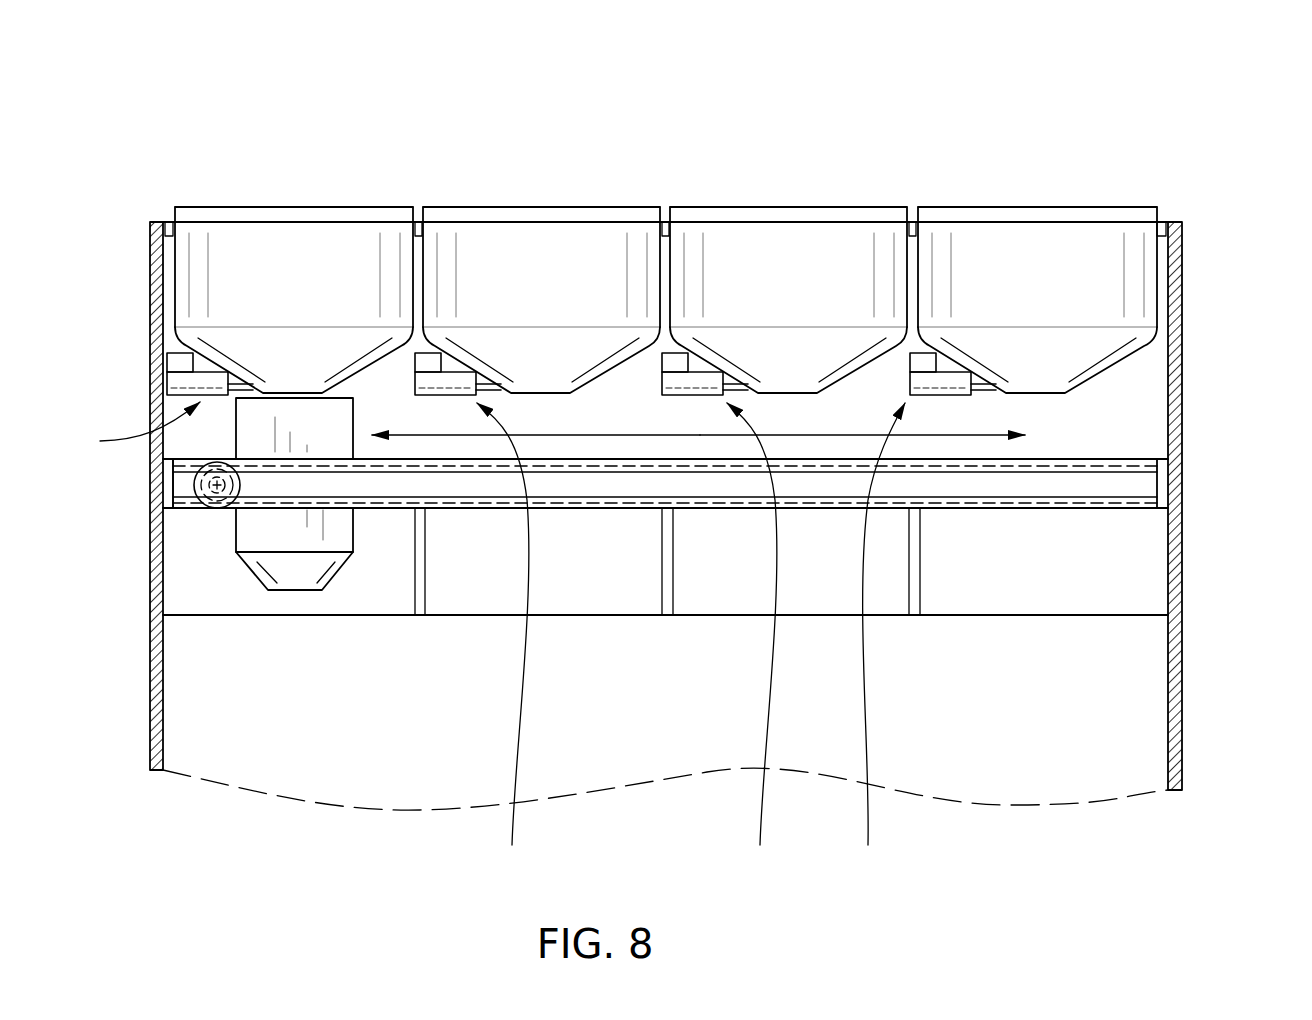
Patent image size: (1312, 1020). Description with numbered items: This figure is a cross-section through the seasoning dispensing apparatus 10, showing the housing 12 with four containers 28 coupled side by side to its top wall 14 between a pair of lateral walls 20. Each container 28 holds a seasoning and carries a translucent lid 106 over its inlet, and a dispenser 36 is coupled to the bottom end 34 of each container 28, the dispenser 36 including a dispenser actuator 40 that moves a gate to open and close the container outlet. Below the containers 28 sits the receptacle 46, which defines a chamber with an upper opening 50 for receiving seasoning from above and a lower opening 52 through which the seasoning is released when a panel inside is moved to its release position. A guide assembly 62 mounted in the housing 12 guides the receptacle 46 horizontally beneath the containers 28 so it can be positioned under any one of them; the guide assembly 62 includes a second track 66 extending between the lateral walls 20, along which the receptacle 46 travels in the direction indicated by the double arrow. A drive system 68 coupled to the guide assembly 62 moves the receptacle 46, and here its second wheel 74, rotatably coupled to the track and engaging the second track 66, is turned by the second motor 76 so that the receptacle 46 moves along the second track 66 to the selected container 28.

The seasoning dispensing apparatus 10 is at (1150, 150).
The housing 12 is at (1200, 220).
The top wall 14 is at (158, 222).
The lateral walls 20 is at (150, 301).
The container 28 is at (230, 253).
The bottom end 34 is at (293, 393).
The dispenser 36 is at (481, 642).
The dispenser actuator 40 is at (183, 381).
The receptacle 46 is at (353, 530).
The upper opening 50 is at (341, 397).
The lower opening 52 is at (297, 600).
The guide assembly 62 is at (1115, 525).
The second track 66 is at (1023, 505).
The drive system 68 is at (208, 520).
The second wheel 74 is at (205, 483).
The second motor 76 is at (200, 507).
The lid 106 is at (323, 207).